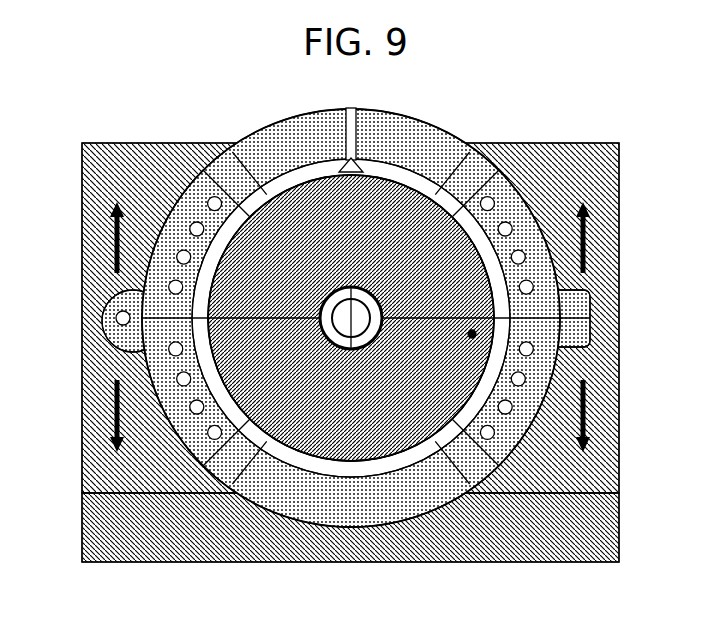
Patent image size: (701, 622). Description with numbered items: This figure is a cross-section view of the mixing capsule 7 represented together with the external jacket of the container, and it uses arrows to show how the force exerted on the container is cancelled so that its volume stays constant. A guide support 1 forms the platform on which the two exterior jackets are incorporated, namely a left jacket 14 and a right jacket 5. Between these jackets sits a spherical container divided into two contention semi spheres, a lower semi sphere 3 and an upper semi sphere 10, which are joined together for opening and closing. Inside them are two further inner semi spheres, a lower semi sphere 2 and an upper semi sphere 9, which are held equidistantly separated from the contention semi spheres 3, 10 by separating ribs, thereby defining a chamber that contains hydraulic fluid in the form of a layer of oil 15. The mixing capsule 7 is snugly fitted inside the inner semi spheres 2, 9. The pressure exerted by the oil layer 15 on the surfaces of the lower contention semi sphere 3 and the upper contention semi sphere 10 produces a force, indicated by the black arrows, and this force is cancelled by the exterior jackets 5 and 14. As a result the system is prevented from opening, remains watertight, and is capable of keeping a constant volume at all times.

The guide support 1 is at (82, 535).
The lower inner semi sphere 2 is at (258, 365).
The lower contention semi sphere 3 is at (140, 357).
The right jacket 5 is at (125, 172).
The mixing capsule 7 is at (346, 313).
The upper inner semi sphere 9 is at (408, 207).
The upper contention semi sphere 10 is at (500, 182).
The left jacket 14 is at (600, 240).
The layer of oil 15 is at (605, 495).